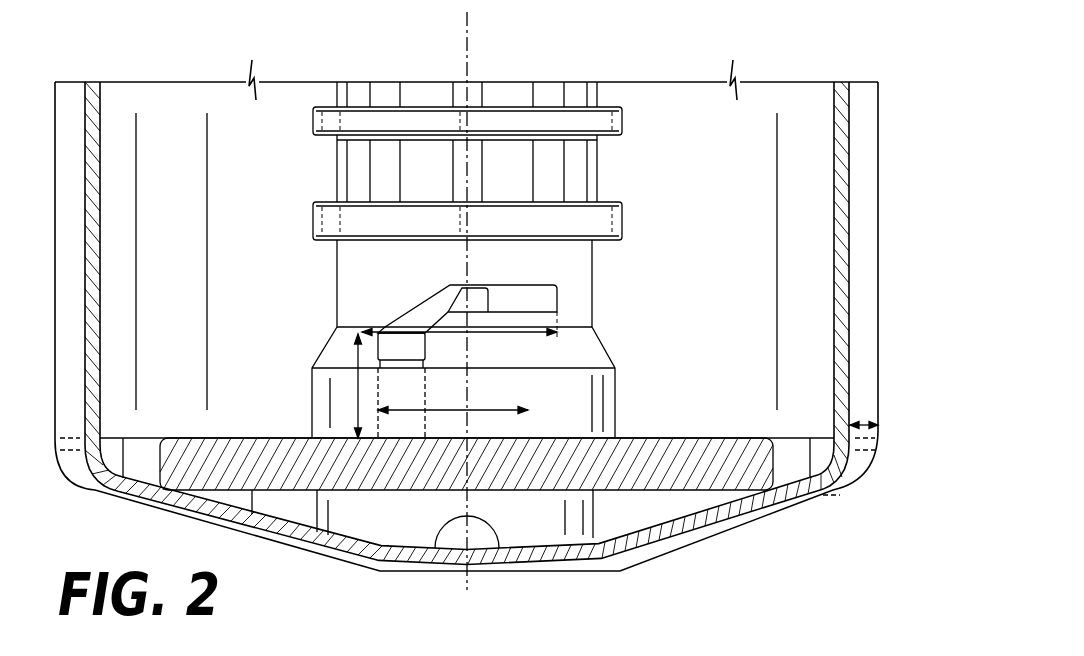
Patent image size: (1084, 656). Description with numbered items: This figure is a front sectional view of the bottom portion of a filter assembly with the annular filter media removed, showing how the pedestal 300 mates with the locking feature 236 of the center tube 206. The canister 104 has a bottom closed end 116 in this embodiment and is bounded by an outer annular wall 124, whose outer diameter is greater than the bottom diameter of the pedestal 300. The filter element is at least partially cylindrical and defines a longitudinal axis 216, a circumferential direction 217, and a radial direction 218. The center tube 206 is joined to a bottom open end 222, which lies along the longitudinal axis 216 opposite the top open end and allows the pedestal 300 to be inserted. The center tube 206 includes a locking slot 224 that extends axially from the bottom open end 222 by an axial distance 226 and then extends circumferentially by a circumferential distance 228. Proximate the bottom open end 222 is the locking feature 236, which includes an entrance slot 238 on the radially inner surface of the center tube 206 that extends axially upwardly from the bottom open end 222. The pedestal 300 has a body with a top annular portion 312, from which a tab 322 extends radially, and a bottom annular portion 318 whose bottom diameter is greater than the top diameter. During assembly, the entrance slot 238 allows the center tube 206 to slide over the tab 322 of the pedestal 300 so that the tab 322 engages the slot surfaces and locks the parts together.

The canister 104 is at (858, 267).
The bottom closed end 116 is at (485, 562).
The outer annular wall 124 is at (100, 296).
The center tube 206 is at (572, 294).
The longitudinal axis 216 is at (468, 27).
The circumferential direction 217 is at (880, 424).
The radial direction 218 is at (490, 400).
The bottom open end 222 is at (602, 443).
The locking slot 224 is at (527, 303).
The axial distance 226 is at (355, 390).
The circumferential distance 228 is at (560, 331).
The locking feature 236 is at (427, 322).
The entrance slot 238 is at (378, 446).
The pedestal 300 is at (592, 518).
The top annular portion 312 is at (343, 283).
The bottom annular portion 318 is at (340, 528).
The tab 322 is at (477, 291).